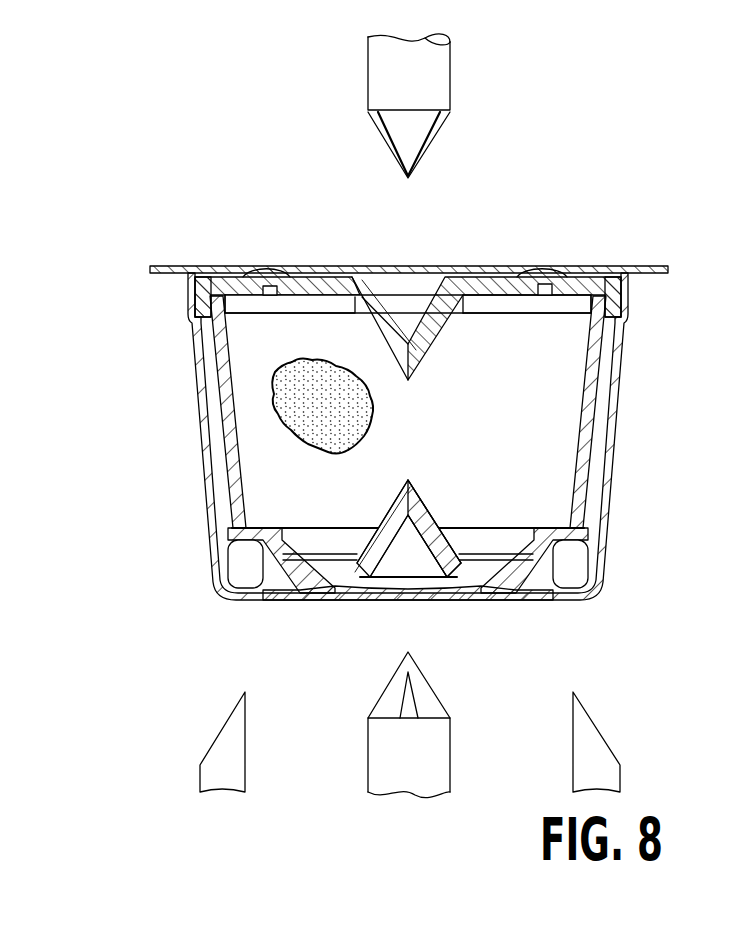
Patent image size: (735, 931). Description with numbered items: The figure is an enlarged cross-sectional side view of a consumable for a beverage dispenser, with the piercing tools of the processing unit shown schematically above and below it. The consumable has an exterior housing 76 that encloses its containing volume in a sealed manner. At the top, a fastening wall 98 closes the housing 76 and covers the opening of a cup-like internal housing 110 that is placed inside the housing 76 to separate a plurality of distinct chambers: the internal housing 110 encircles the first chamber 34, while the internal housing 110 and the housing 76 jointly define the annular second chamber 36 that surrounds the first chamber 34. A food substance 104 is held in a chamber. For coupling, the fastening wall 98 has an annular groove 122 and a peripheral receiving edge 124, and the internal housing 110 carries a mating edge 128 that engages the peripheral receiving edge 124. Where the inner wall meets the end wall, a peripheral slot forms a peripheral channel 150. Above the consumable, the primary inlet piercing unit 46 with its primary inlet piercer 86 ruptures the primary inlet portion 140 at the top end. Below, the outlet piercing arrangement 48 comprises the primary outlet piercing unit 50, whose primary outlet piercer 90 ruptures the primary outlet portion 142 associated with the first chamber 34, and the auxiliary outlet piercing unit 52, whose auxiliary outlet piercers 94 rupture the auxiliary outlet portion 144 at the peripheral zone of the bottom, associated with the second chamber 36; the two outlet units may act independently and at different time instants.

The first chamber 34 is at (407, 437).
The second chamber 36 is at (455, 491).
The primary inlet piercing unit 46 is at (434, 106).
The outlet piercing arrangement 48 is at (390, 760).
The primary outlet piercing unit 50 is at (460, 720).
The auxiliary outlet piercing unit 52 is at (390, 736).
The housing 76 is at (205, 462).
The primary inlet piercer 86 is at (375, 73).
The primary outlet piercer 90 is at (430, 773).
The auxiliary outlet piercer 94 is at (222, 773).
The fastening wall 98 is at (409, 284).
The food substance 104 is at (270, 380).
The internal housing 110 is at (597, 391).
The annular groove 122 is at (541, 277).
The peripheral receiving edge 124 is at (614, 283).
The mating edge 128 is at (216, 292).
The primary inlet portion 140 is at (426, 312).
The primary outlet portion 142 is at (390, 535).
The auxiliary outlet portion 144 is at (461, 607).
The peripheral channel 150 is at (580, 567).